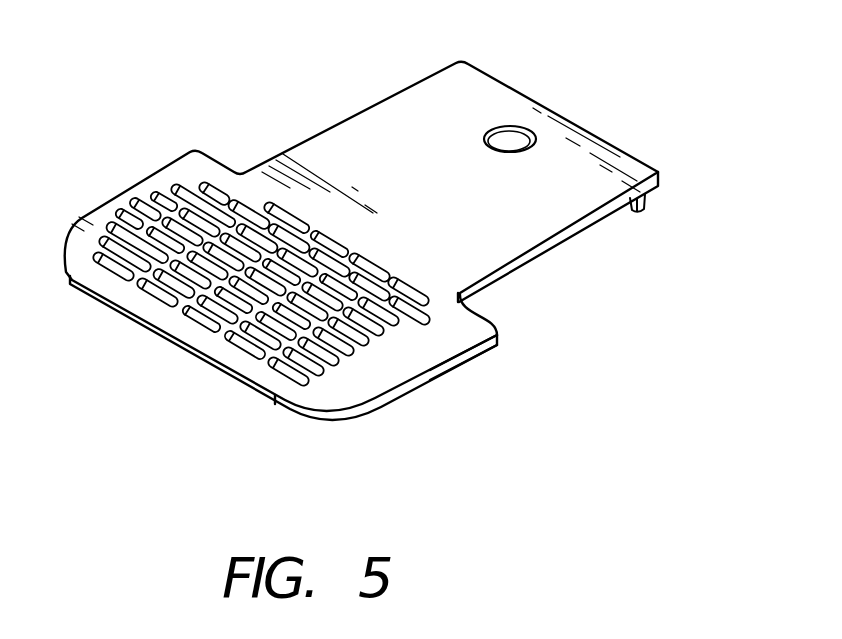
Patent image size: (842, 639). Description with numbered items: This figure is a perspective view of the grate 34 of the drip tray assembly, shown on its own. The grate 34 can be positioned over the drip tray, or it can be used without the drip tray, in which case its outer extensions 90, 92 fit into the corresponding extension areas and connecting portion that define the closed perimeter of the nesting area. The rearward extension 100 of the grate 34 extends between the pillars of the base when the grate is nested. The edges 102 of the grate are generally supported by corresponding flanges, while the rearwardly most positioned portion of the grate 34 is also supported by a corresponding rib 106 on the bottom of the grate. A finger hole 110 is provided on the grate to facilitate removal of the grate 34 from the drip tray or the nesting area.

The grate 34 is at (246, 433).
The outer extension 90 is at (112, 204).
The outer extension 92 is at (447, 357).
The rearward extension 100 is at (421, 117).
The edges 102 is at (323, 131).
The rib 106 is at (640, 206).
The finger hole 110 is at (510, 138).